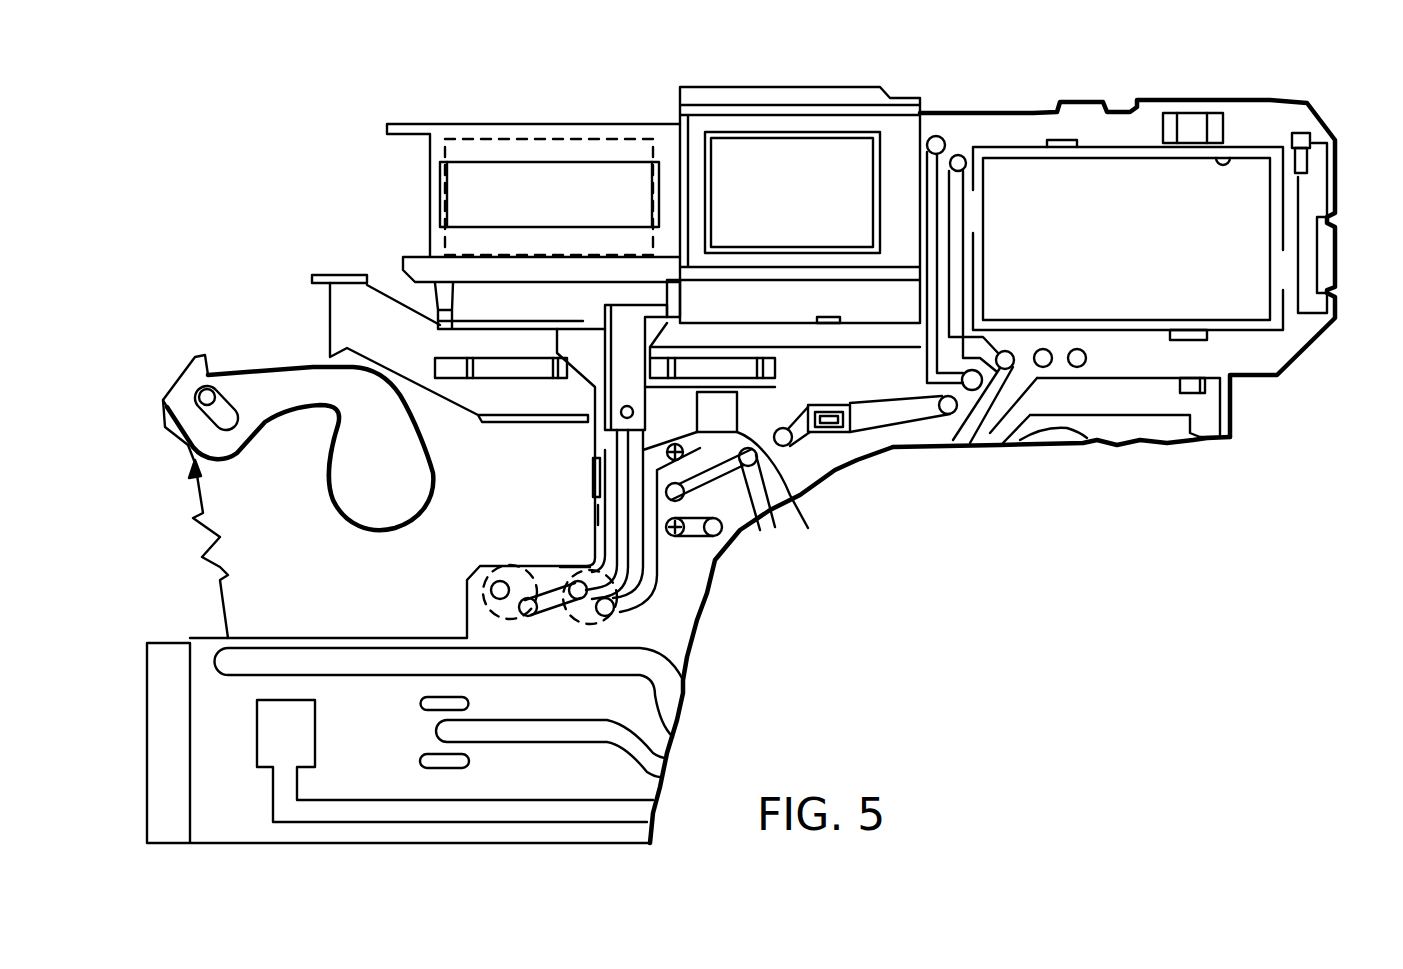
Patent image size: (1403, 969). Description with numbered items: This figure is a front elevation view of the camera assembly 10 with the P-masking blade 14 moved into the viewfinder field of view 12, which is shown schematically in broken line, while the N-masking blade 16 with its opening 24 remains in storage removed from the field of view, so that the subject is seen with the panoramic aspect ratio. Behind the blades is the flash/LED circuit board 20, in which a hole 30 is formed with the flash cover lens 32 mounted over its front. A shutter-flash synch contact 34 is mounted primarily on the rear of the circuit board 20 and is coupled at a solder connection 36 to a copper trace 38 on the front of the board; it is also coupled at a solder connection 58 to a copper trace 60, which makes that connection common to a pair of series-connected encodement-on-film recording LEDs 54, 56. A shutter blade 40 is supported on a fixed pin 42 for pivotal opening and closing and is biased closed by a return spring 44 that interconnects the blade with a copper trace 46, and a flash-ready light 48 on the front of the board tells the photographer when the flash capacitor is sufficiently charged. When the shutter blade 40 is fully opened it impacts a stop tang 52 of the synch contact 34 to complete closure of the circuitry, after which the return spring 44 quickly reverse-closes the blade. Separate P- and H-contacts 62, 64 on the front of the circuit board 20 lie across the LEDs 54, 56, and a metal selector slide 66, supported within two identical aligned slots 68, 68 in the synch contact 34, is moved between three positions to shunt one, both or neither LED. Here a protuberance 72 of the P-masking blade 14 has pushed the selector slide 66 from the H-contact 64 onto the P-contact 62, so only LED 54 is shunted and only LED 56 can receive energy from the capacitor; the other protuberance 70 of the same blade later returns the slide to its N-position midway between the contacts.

The camera assembly 10 is at (318, 120).
The viewfinder field of view 12 is at (480, 135).
The P-masking blade 14 is at (610, 125).
The N-masking blade 16 is at (750, 87).
The flash/LED circuit board 20 is at (207, 843).
The opening 24 is at (805, 137).
The hole 30 is at (1230, 158).
The flash cover lens 32 is at (1250, 215).
The shutter-flash synch contact 34 is at (340, 327).
The solder connection 36 is at (833, 432).
The copper trace 38 is at (910, 413).
The shutter blade 40 is at (345, 495).
The fixed pin 42 is at (203, 395).
The return spring 44 is at (207, 543).
The copper trace 46 is at (310, 657).
The flash-ready light 48 is at (941, 138).
The stop tang 52 is at (340, 275).
The LED 54 is at (467, 610).
The LED 56 is at (607, 627).
The solder connection 58 is at (597, 477).
The copper trace 60 is at (600, 527).
The P-contact 62 is at (613, 430).
The H-contact 64 is at (806, 510).
The metal selector slide 66 is at (607, 317).
The slots 68 is at (767, 342).
The protuberance 70 is at (452, 306).
The protuberance 72 is at (680, 300).